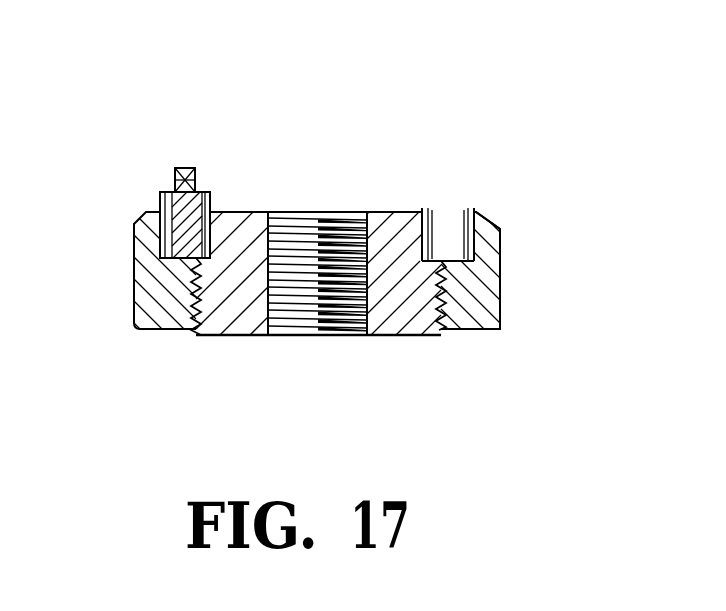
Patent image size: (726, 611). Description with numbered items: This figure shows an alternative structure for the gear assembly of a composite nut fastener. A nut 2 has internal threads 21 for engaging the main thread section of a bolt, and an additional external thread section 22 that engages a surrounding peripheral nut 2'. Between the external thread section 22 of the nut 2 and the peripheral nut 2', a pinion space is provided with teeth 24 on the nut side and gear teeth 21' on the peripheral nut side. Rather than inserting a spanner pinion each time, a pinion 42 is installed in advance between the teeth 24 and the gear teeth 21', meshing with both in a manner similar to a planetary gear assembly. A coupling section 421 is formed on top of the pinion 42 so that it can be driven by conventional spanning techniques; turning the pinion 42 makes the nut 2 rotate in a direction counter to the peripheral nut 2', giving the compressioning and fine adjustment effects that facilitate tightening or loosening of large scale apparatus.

The nut 2 is at (318, 214).
The peripheral nut 2' is at (369, 285).
The internal threads 21 is at (317, 212).
The pinion space / gear teeth 21' is at (543, 214).
The external thread section 22 is at (437, 293).
The teeth 24 is at (443, 220).
The pinion 42 is at (158, 206).
The coupling section 421 is at (181, 168).